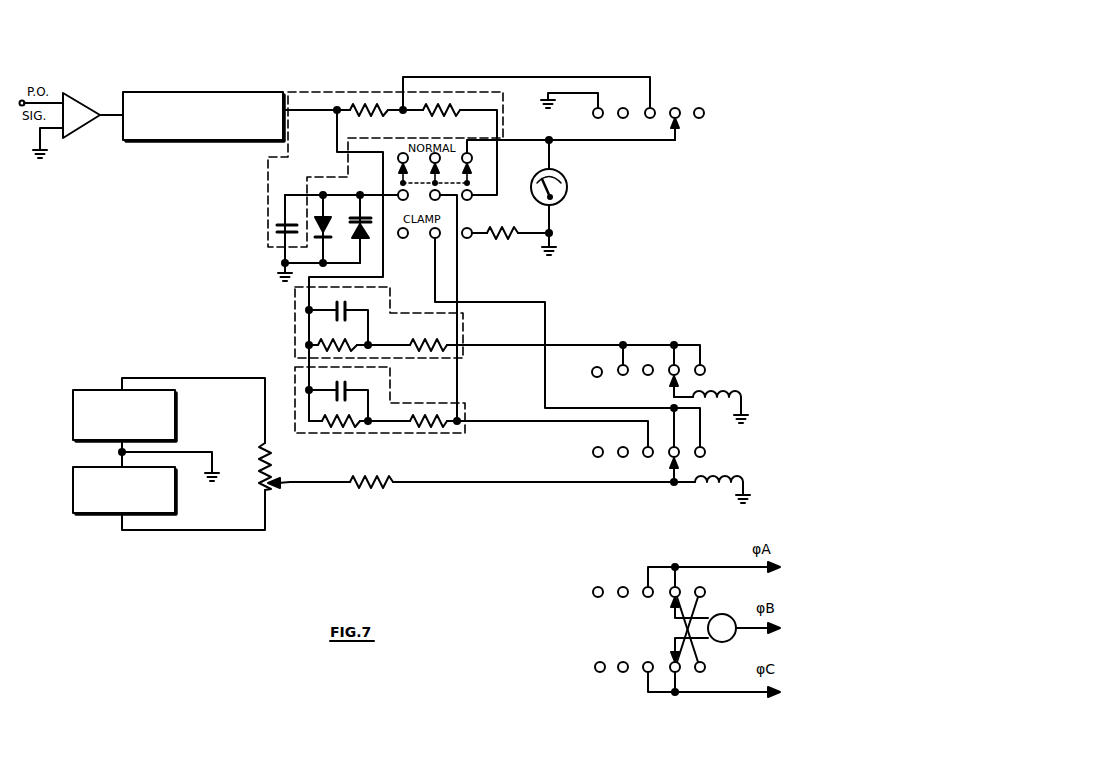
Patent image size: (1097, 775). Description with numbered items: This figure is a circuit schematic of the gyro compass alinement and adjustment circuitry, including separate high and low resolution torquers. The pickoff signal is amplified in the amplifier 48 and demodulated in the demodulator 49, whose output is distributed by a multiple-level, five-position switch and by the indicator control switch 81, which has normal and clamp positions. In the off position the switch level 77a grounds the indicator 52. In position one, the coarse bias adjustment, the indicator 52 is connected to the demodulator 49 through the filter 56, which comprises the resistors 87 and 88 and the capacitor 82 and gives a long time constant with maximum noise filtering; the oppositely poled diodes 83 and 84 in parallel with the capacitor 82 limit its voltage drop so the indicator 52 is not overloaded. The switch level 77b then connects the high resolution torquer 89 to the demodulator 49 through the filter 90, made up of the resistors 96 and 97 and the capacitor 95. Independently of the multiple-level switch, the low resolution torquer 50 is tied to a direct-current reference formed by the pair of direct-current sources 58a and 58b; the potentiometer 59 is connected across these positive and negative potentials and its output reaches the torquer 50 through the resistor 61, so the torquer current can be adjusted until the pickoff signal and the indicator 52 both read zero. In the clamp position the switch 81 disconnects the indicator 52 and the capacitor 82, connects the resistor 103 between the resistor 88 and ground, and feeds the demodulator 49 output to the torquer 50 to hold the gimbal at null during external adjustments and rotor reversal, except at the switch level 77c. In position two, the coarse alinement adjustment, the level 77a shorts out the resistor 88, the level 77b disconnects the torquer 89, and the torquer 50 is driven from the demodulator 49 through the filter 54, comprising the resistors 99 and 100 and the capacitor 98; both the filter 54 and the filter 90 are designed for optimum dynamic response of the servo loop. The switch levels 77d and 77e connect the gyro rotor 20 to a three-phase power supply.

The amplifier 48 is at (80, 106).
The demodulator 49 is at (227, 92).
The resistor 87 is at (368, 100).
The resistor 88 is at (447, 106).
The filter 56 is at (367, 189).
The capacitor 82 is at (275, 227).
The diode 83 is at (328, 223).
The diode 84 is at (366, 213).
The indicator control switch 81 is at (486, 153).
The resistor 103 is at (500, 216).
The indicator 52 is at (567, 191).
The switch level 77a is at (700, 105).
The filter 90 is at (472, 327).
The capacitor 95 is at (346, 309).
The resistor 96 is at (348, 343).
The resistor 97 is at (436, 342).
The filter 54 is at (453, 403).
The capacitor 98 is at (346, 389).
The resistor 99 is at (348, 426).
The resistor 100 is at (426, 414).
The switch level 77b is at (660, 343).
The high resolution torquer 89 is at (723, 390).
The switch level 77c is at (663, 407).
The resistor 61 is at (492, 473).
The low resolution torquer 50 is at (716, 489).
The potentiometer 59 is at (270, 462).
The direct-current source 58a is at (180, 408).
The direct-current source 58b is at (180, 477).
The switch level 77d is at (722, 565).
The switch level 77e is at (695, 697).
The gyro rotor 20 is at (731, 638).